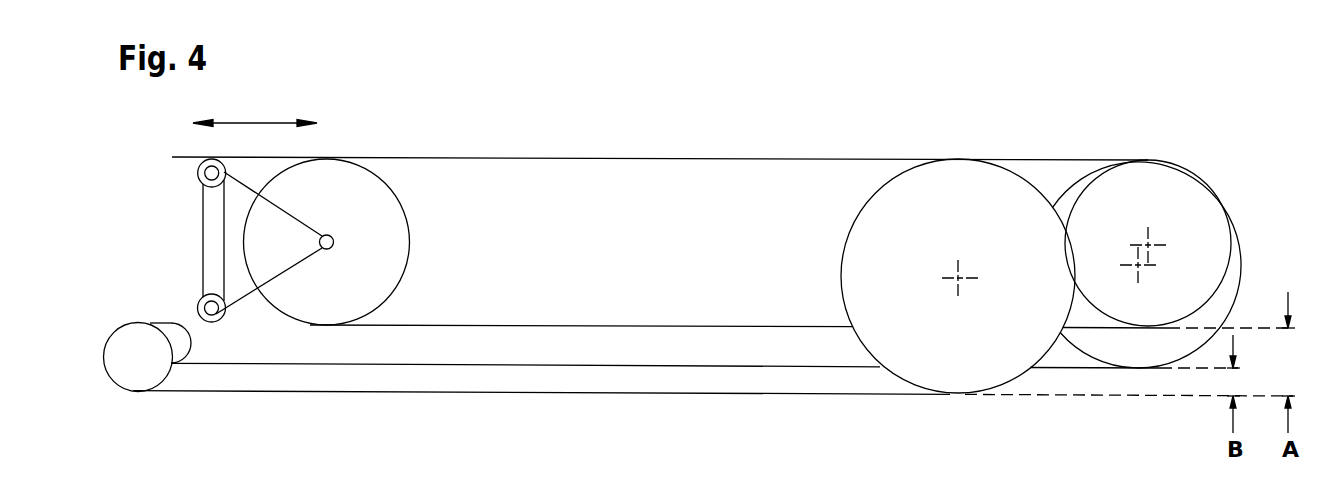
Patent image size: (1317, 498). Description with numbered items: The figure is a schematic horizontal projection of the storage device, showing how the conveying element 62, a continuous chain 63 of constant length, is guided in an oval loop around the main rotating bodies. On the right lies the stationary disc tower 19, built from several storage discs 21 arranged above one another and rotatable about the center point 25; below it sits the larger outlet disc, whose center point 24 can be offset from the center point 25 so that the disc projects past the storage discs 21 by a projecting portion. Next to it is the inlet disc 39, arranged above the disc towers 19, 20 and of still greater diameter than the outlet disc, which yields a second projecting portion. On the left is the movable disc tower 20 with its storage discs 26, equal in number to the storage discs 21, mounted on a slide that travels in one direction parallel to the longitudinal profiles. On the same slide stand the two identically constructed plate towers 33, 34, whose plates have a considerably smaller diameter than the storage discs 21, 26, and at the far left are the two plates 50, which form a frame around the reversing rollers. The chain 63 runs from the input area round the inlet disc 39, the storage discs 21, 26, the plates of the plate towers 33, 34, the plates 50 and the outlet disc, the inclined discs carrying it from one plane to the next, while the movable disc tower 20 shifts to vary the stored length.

The disc tower 19 is at (1165, 214).
The disc tower 20 is at (334, 213).
The storage discs 21 is at (1164, 235).
The center point 24 is at (1138, 265).
The center point 25 is at (1150, 243).
The storage discs 26 is at (387, 207).
The plate tower 33 is at (212, 312).
The plate tower 34 is at (203, 163).
The inlet disc 39 is at (940, 188).
The plates 50 is at (140, 360).
The conveying element 62 is at (670, 215).
The chain 63 is at (620, 158).